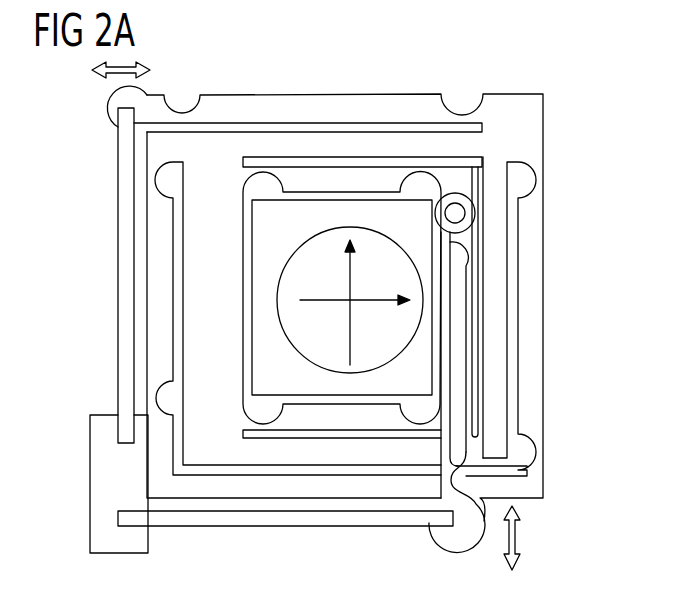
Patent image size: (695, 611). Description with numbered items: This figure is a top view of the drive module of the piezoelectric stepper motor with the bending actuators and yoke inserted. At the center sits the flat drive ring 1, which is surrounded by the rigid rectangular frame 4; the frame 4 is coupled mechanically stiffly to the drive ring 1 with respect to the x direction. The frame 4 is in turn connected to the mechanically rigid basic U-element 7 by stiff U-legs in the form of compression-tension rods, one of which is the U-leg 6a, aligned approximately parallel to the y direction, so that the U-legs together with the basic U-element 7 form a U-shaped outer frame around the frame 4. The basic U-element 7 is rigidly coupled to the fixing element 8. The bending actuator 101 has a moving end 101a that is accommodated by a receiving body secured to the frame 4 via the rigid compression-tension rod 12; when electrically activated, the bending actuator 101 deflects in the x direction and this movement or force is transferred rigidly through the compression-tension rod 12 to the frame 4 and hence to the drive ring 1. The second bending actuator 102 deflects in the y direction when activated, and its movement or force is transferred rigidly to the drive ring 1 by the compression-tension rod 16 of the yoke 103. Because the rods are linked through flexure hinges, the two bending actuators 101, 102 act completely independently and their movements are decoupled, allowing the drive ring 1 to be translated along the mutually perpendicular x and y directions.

The drive ring 1 is at (263, 322).
The rectangular frame 4 is at (320, 141).
The U-leg (compression-tension rod) 6a is at (532, 255).
The basic U-element 7 is at (478, 488).
The fixing element 8 is at (97, 465).
The compression-tension rod 12 is at (372, 101).
The compression-tension rod 16 is at (457, 325).
The bending actuator 101 is at (125, 230).
The moving end 101a is at (110, 115).
The bending actuator 102 is at (300, 522).
The yoke element 103 is at (457, 360).